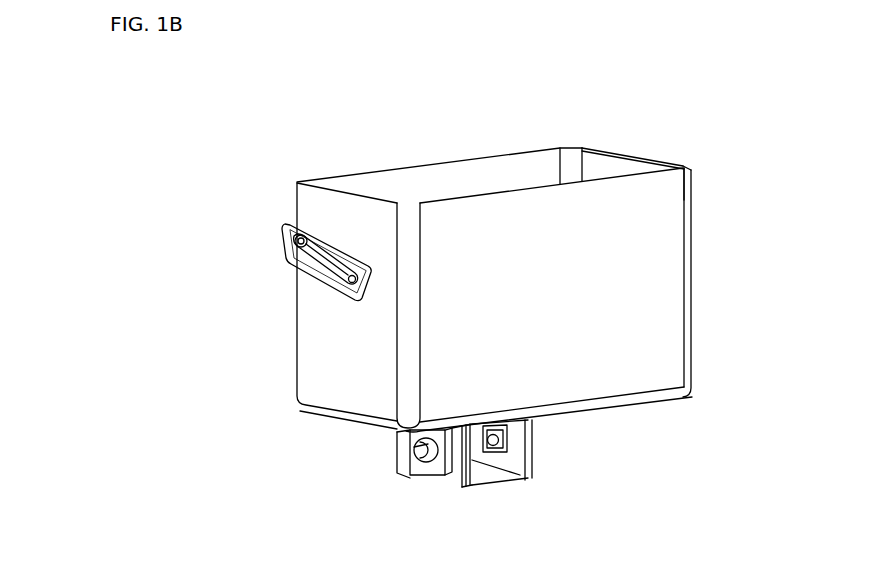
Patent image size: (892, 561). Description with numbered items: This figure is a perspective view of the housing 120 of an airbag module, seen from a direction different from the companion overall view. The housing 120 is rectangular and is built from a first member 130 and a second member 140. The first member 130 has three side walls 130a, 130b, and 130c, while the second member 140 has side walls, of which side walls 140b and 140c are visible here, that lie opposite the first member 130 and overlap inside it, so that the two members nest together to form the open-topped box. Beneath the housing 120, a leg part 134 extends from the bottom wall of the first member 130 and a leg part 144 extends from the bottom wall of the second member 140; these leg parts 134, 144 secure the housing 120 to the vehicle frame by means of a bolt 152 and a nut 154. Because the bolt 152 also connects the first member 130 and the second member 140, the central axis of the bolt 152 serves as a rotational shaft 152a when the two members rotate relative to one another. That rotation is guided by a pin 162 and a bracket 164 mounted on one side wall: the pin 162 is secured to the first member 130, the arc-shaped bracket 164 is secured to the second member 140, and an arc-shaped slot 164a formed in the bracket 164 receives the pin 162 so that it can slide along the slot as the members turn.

The housing 120 is at (629, 104).
The first member 130 is at (648, 418).
The side wall 130a is at (329, 336).
The side wall 130b is at (672, 270).
The side wall 130c is at (693, 168).
The leg part 134 is at (455, 483).
The second member 140 is at (401, 157).
The side wall 140b is at (485, 166).
The side wall 140c is at (636, 167).
The leg part 144 is at (395, 452).
The bolt 152 is at (400, 449).
The rotational shaft 152a is at (535, 428).
The nut 154 is at (508, 440).
The pin 162 is at (290, 252).
The bracket 164 is at (296, 223).
The arc-shaped slot 164a is at (326, 243).